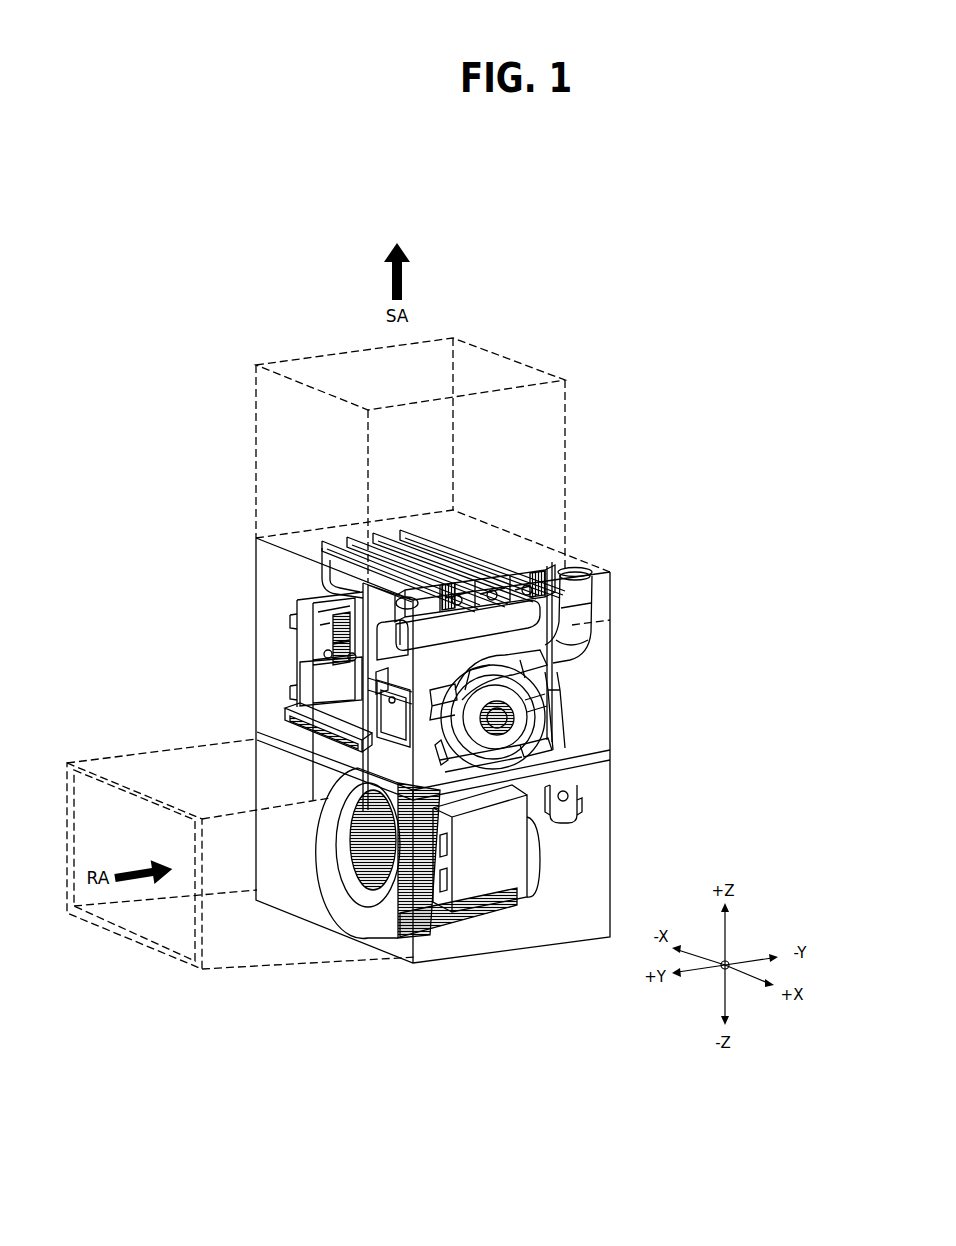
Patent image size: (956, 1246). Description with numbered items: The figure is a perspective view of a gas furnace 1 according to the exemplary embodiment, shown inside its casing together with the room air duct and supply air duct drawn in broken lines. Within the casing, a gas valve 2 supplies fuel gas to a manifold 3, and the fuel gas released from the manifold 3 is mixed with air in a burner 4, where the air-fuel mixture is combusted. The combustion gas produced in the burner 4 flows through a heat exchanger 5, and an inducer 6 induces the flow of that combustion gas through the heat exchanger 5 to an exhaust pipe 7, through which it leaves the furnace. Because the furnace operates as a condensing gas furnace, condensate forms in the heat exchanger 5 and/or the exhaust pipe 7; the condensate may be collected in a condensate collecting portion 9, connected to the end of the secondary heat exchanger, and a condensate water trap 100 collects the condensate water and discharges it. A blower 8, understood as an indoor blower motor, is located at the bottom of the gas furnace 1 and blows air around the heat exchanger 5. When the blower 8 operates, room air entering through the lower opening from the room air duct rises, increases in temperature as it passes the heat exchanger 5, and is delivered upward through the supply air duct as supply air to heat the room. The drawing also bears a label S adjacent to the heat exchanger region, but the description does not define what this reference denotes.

The gas furnace 1 is at (230, 239).
The gas valve 2 is at (546, 656).
The manifold 3 is at (546, 613).
The burner 4 is at (514, 570).
The heat exchanger 5 is at (441, 532).
The inducer 6 is at (547, 738).
The exhaust pipe 7 is at (568, 625).
The blower 8 is at (368, 915).
The condensate collecting portion 9 is at (551, 695).
The condensate water trap 100 is at (590, 790).
The sensor S is at (380, 680).